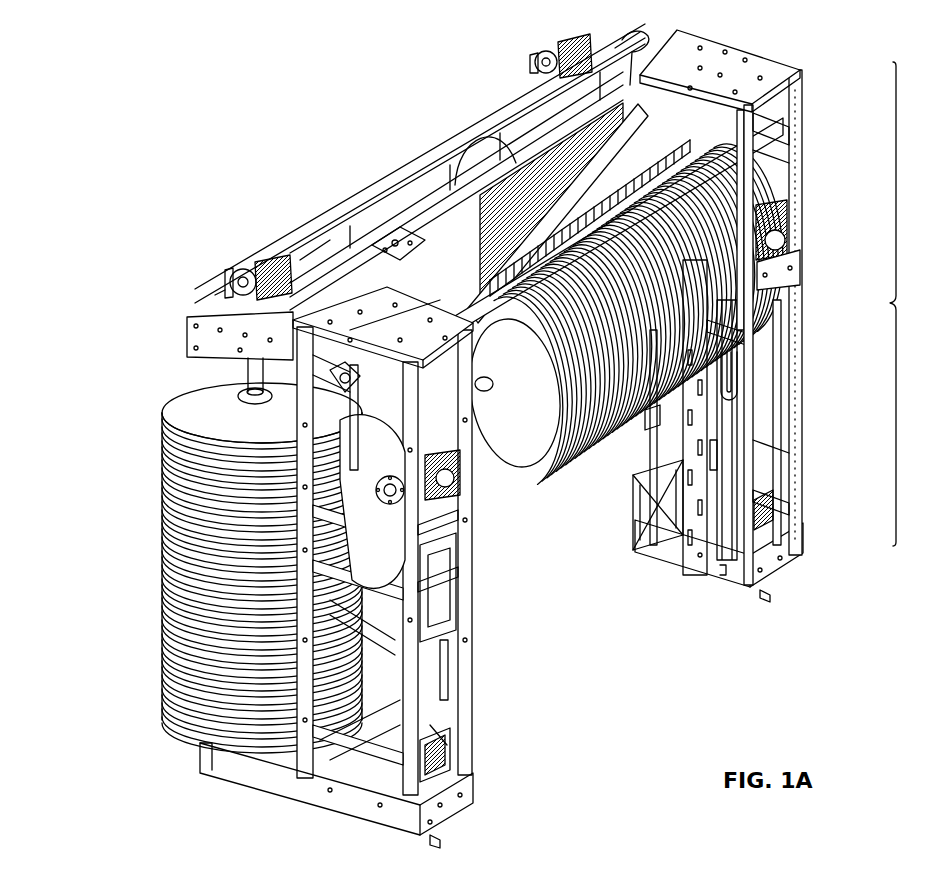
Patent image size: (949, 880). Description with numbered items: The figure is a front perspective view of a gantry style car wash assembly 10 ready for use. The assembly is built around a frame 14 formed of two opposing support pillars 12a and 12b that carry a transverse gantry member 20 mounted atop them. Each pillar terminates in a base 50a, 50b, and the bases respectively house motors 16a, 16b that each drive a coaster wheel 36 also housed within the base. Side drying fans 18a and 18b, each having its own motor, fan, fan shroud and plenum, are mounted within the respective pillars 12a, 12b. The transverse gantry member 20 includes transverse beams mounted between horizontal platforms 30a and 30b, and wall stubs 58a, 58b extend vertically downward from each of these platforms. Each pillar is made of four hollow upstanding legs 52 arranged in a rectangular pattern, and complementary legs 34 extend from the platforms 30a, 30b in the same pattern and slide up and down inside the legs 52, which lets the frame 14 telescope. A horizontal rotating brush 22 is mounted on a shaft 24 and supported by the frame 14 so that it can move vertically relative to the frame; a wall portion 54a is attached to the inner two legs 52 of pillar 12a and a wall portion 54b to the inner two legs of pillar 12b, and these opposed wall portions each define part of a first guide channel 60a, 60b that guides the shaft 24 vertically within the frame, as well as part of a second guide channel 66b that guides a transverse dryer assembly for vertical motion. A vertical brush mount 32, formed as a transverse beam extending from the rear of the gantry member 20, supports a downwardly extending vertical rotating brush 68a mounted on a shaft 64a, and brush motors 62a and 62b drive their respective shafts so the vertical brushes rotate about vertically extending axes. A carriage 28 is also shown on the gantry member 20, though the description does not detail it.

The gantry style car wash assembly 10 is at (758, 30).
The support pillar 12a is at (457, 693).
The support pillar 12b is at (735, 525).
The frame 14 is at (908, 304).
The motor 16a is at (443, 760).
The motor 16b is at (770, 513).
The side drying fan 18a is at (413, 487).
The side drying fan 18b is at (782, 246).
The transverse gantry member 20 is at (425, 93).
The horizontal rotating brush 22 is at (540, 418).
The shaft 24 is at (484, 391).
The carriage 28 is at (636, 78).
The horizontal platform 30a is at (347, 310).
The horizontal platform 30b is at (752, 62).
The vertical brush mount 32 is at (195, 338).
The complementary leg 34 is at (798, 153).
The coaster wheel 36 is at (471, 818).
The base 50a is at (330, 803).
The base 50b is at (728, 588).
The upstanding leg 52 is at (797, 353).
The wall portion 54a is at (460, 635).
The wall portion 54b is at (697, 537).
The wall stub 58a is at (462, 407).
The wall stub 58b is at (750, 161).
The first guide channel 60a is at (443, 650).
The first guide channel 60b is at (714, 452).
The brush motor 62a is at (252, 264).
The brush motor 62b is at (580, 42).
The shaft 64a is at (240, 387).
The second guide channel 66b is at (655, 420).
The vertical rotating brush 68a is at (163, 600).